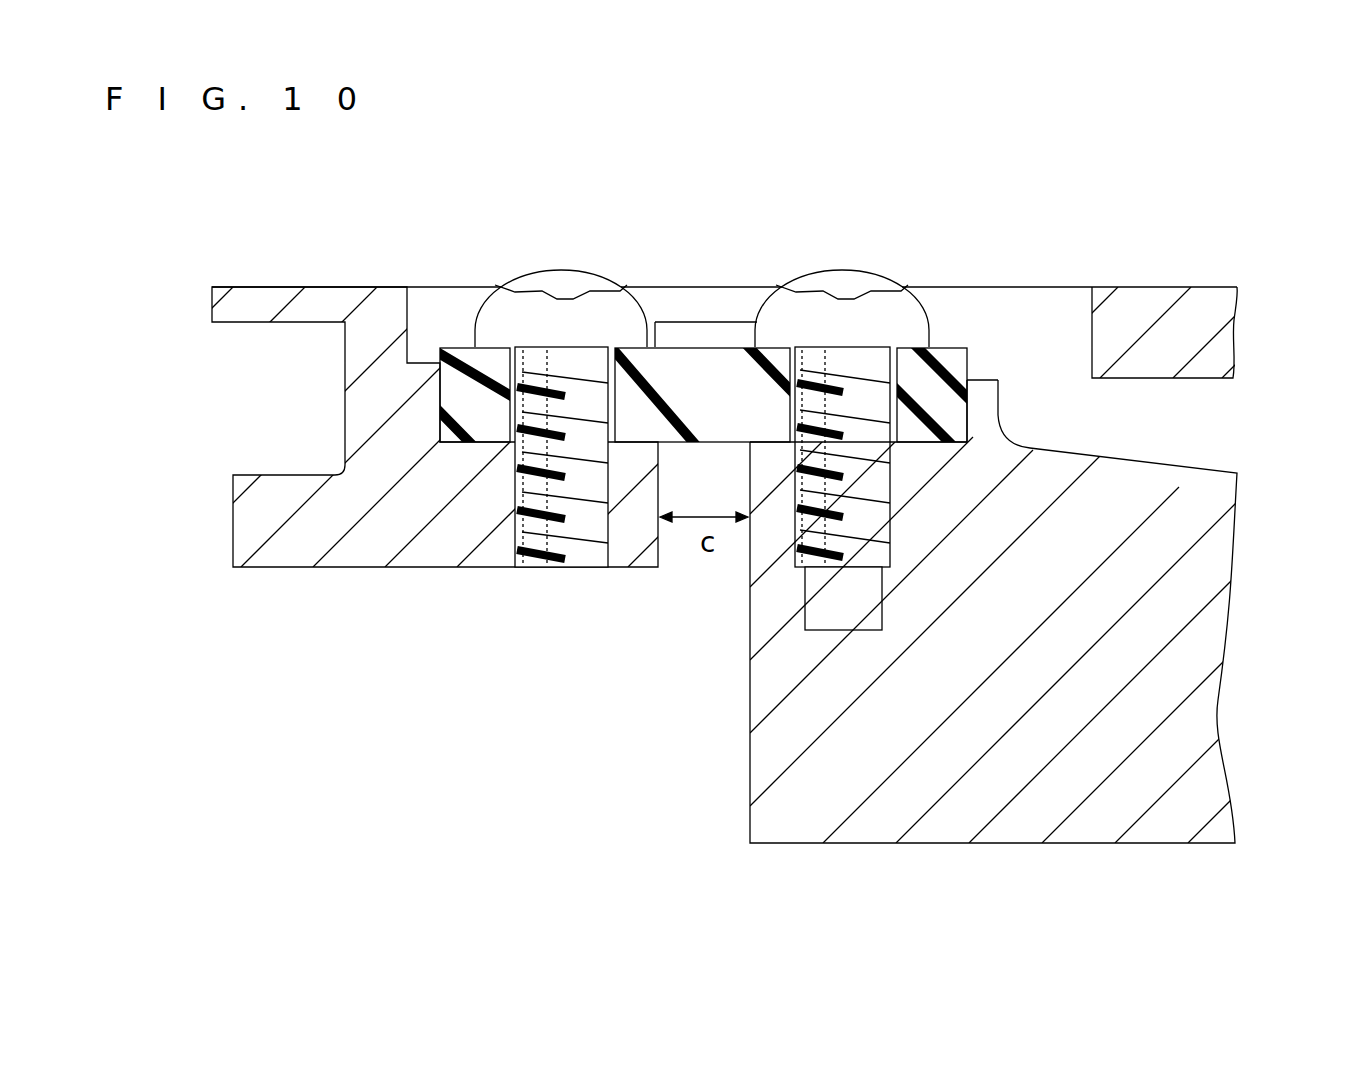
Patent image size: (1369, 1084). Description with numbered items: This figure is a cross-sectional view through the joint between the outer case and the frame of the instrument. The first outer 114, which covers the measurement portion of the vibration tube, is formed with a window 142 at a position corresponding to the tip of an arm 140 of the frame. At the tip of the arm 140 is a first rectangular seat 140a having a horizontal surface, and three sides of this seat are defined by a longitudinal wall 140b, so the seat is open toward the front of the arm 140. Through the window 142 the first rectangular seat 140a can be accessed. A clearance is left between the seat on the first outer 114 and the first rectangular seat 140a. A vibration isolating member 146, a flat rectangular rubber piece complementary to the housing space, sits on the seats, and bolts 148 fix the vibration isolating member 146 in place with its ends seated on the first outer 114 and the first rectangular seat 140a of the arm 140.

The first outer 114 is at (397, 508).
The window 142 is at (957, 308).
The vibration isolating member 146 is at (690, 392).
The bolt 148 is at (560, 268).
The arm 140 is at (1210, 522).
The first rectangular seat 140a is at (923, 433).
The longitudinal wall 140b is at (978, 405).